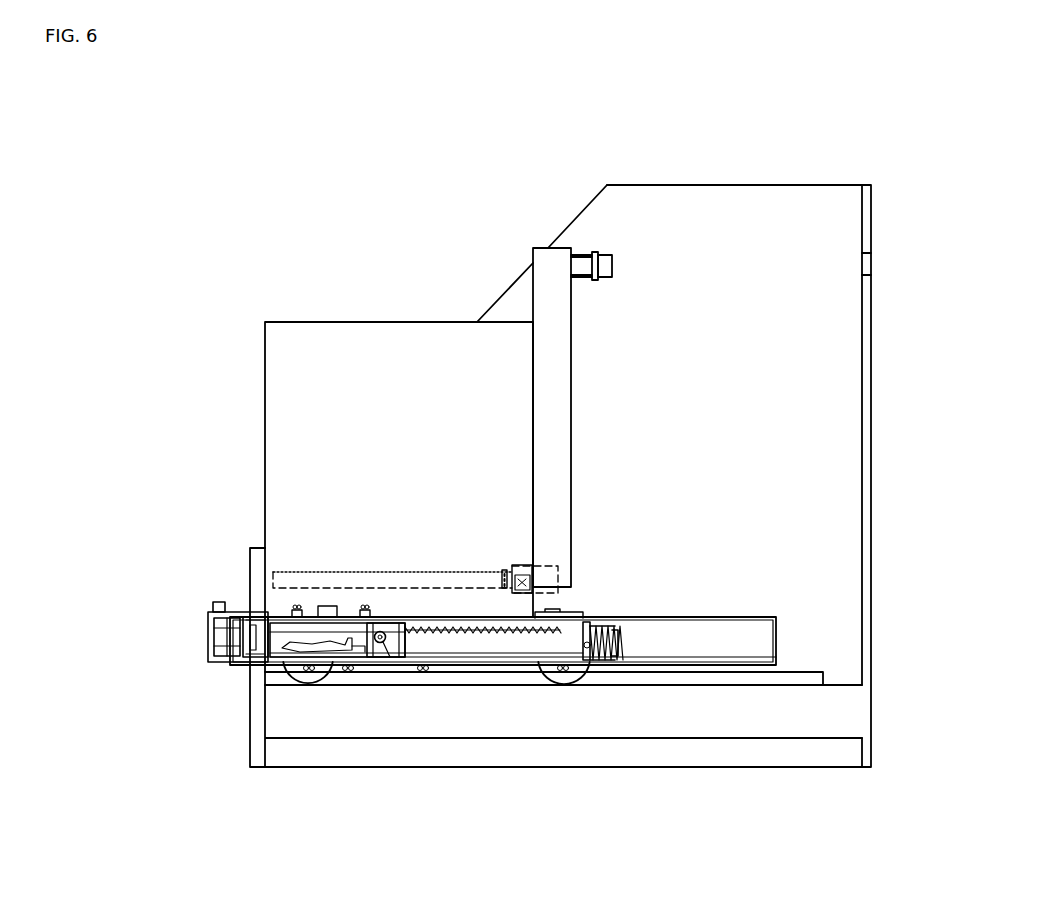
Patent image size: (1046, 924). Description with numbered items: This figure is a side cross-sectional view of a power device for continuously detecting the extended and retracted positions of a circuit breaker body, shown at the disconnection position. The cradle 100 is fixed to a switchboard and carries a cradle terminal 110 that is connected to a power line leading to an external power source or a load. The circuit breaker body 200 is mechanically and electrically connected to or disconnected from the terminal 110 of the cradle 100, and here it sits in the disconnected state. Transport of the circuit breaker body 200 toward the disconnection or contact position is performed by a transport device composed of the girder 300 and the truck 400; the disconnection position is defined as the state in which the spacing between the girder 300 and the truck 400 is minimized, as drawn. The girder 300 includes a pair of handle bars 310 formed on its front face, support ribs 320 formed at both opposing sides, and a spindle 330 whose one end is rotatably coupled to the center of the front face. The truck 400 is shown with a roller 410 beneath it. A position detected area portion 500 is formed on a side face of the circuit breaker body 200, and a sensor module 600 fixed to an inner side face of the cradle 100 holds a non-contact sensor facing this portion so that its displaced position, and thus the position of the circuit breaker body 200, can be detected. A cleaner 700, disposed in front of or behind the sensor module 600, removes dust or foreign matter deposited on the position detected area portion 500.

The cradle 100 is at (852, 170).
The cradle terminal 110 is at (872, 265).
The circuit breaker body 200 is at (308, 318).
The girder 300 is at (207, 637).
The handle bars 310 is at (213, 663).
The support ribs 320 is at (258, 663).
The spindle 330 is at (598, 655).
The truck 400 is at (507, 668).
The roller 410 is at (568, 672).
The position detected area portion 500 is at (283, 578).
The sensor module 600 is at (523, 564).
The cleaner 700 is at (505, 564).